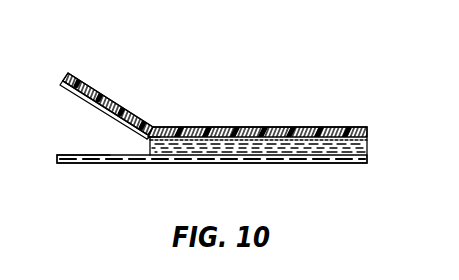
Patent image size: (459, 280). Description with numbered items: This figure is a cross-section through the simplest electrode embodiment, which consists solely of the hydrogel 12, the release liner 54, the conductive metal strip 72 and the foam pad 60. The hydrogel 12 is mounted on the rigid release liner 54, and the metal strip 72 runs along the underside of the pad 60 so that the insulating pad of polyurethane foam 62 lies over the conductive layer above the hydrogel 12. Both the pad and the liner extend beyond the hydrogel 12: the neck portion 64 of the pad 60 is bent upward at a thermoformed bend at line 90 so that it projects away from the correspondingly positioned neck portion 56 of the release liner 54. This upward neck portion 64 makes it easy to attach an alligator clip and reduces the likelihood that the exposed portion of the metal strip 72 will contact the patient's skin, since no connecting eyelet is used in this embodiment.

The hydrogel 12 is at (179, 165).
The release liner 54 is at (277, 164).
The neck portion of release liner 56 is at (87, 164).
The foam pad 60 is at (308, 128).
The insulating pad of polyurethane foam 62 is at (195, 127).
The neck portion 64 is at (82, 80).
The conductive metal strip 72 is at (66, 89).
The bend line 90 is at (155, 124).